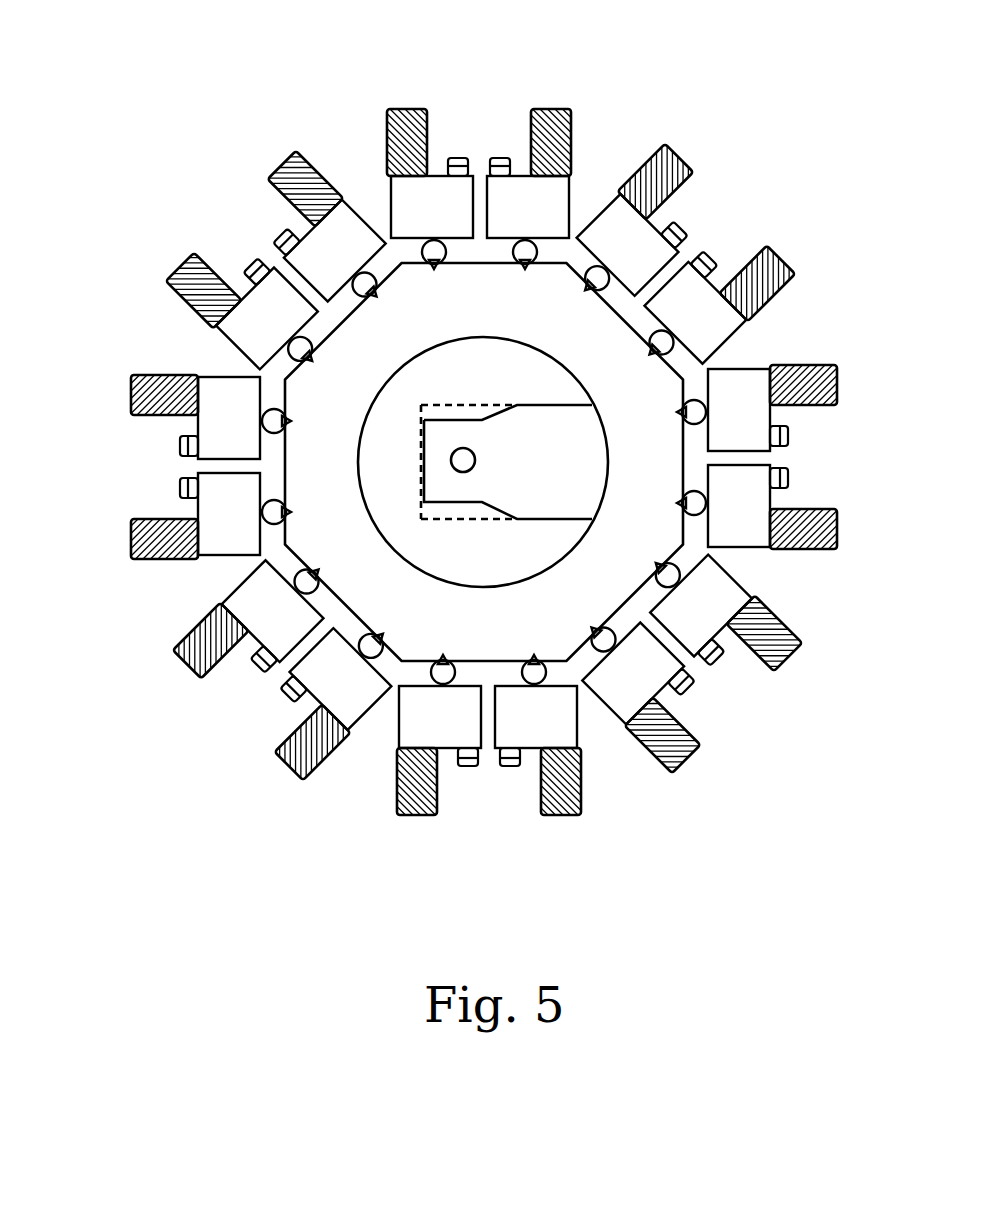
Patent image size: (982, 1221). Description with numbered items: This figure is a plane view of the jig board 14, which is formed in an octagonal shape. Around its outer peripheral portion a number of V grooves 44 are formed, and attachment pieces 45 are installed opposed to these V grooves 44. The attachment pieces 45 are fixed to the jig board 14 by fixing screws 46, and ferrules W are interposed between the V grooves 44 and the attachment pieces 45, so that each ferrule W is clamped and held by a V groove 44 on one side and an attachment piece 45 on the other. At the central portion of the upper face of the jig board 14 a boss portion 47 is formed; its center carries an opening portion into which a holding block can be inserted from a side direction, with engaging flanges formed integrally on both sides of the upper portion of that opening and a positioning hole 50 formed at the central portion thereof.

The jig board 14 is at (645, 385).
The V grooves 44 is at (372, 297).
The attachment pieces 45 is at (327, 235).
The fixing screws 46 is at (130, 376).
The boss portion 47 is at (530, 367).
The positioning hole 50 is at (453, 464).
The ferrules W is at (600, 283).